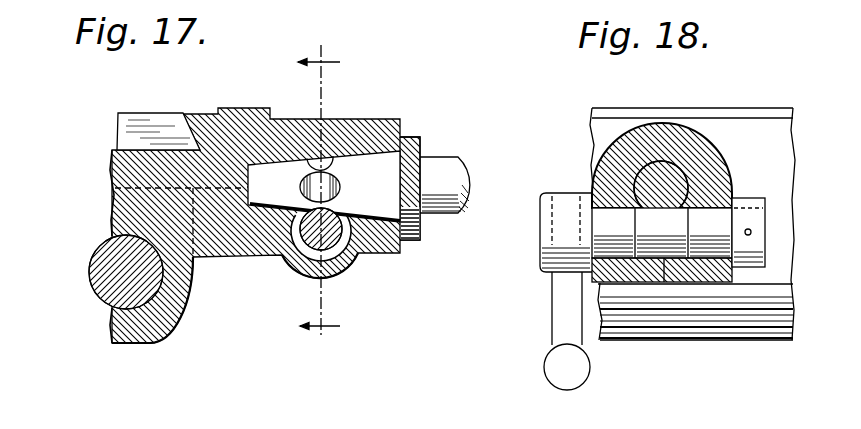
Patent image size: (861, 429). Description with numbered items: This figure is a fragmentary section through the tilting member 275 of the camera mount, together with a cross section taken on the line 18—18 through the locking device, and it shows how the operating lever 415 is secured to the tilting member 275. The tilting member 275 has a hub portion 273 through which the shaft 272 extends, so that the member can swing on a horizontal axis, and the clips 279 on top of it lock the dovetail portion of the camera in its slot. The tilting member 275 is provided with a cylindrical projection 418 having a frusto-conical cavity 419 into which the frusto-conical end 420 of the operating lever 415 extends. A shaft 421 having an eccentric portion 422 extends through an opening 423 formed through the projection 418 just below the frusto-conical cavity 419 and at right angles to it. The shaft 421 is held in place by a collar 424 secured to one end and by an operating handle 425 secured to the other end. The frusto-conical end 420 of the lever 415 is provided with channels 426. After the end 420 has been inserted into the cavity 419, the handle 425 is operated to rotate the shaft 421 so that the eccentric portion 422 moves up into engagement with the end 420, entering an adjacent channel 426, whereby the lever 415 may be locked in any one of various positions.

In FIG. 17, the tilting member 275 is at (132, 163).
In FIG. 18, the tilting member 275 is at (627, 122).
In FIG. 17, the clips 279 is at (172, 113).
In FIG. 17, the shaft 272 is at (110, 298).
In FIG. 17, the hub portion 273 is at (152, 327).
In FIG. 18, the hub portion 273 is at (762, 323).
In FIG. 17, the cylindrical projection 418 is at (337, 132).
In FIG. 18, the cylindrical projection 418 is at (622, 150).
In FIG. 17, the frusto-conical cavity 419 is at (367, 153).
In FIG. 18, the frusto-conical cavity 419 is at (668, 158).
In FIG. 17, the frusto-conical end 420 is at (380, 173).
In FIG. 18, the frusto-conical end 420 is at (698, 158).
In FIG. 17, the operating lever 415 is at (448, 172).
In FIG. 17, the channels 426 is at (295, 218).
In FIG. 18, the channels 426 is at (687, 182).
In FIG. 17, the eccentric portion 422 is at (305, 250).
In FIG. 18, the eccentric portion 422 is at (667, 227).
In FIG. 17, the shaft 421 is at (348, 272).
In FIG. 18, the shaft 421 is at (712, 218).
In FIG. 18, the opening 423 is at (598, 207).
In FIG. 18, the collar 424 is at (753, 218).
In FIG. 18, the operating handle 425 is at (555, 255).
In FIG. 17, the section line 18— 18 is at (319, 194).